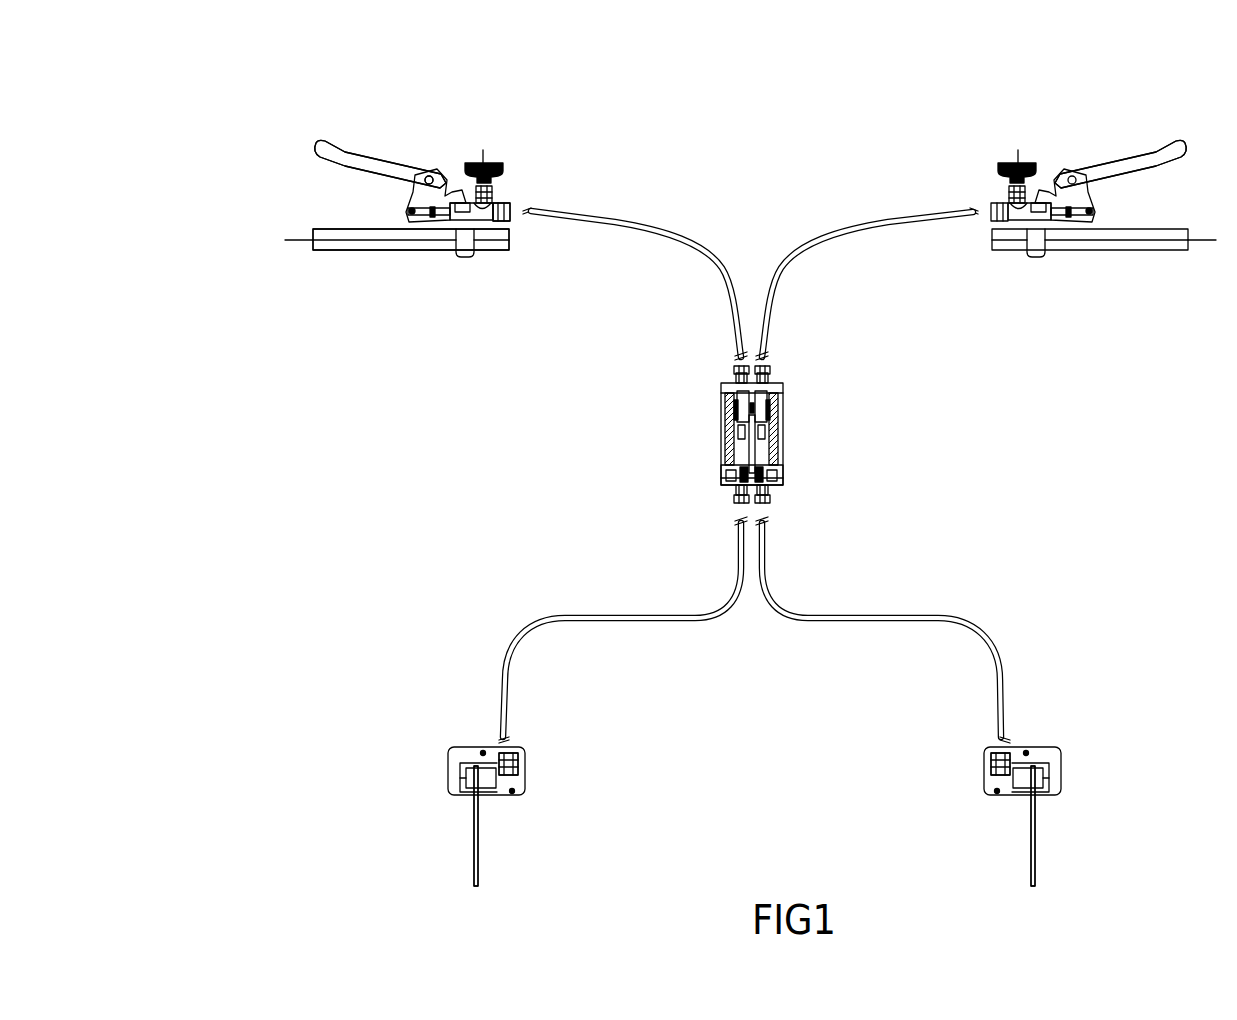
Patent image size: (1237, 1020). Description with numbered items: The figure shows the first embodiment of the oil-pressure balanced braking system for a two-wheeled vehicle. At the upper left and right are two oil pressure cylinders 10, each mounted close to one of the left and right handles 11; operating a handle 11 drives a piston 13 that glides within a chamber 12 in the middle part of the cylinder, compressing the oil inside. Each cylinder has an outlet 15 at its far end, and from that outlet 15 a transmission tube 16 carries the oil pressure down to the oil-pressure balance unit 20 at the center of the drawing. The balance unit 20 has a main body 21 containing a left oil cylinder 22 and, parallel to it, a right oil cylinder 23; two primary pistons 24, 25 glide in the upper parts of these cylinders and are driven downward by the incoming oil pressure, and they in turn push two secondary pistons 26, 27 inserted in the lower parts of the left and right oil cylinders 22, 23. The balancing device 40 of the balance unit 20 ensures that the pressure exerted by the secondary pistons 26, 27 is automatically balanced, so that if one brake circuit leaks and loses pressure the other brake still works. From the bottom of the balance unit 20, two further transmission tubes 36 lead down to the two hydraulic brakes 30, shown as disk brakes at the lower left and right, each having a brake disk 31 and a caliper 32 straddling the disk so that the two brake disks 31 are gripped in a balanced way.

The oil pressure cylinder 10 is at (498, 203).
The handle 11 is at (360, 168).
The chamber 12 is at (482, 215).
The piston 13 is at (447, 190).
The outlet 15 is at (513, 218).
The transmission tube 16 is at (633, 222).
The oil-pressure balance unit 20 is at (797, 420).
The main body 21 is at (720, 453).
The left oil cylinder 22 is at (722, 462).
The right oil cylinder 23 is at (773, 460).
The primary piston 24 is at (740, 408).
The primary piston 25 is at (773, 405).
The secondary piston 26 is at (720, 448).
The secondary piston 27 is at (785, 442).
The balancing device 40 is at (796, 482).
The transmission tube 36 is at (545, 620).
The hydraulic brake 30 is at (440, 745).
The brake disk 31 is at (480, 838).
The caliper 32 is at (500, 748).